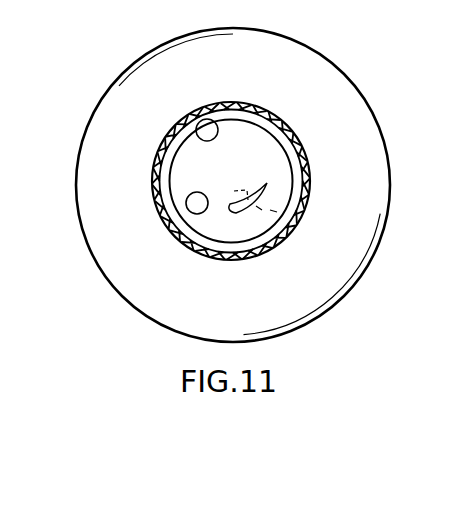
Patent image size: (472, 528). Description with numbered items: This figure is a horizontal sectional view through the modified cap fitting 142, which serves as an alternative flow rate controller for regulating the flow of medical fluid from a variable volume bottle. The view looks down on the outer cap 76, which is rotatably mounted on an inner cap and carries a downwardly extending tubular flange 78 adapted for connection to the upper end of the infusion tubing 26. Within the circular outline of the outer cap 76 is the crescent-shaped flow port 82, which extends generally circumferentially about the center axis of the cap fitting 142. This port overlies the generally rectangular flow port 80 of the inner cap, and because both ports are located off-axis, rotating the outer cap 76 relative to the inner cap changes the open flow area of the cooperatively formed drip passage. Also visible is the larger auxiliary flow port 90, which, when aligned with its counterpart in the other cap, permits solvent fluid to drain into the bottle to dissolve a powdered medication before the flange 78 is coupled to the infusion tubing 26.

The modified cap fitting 142 is at (84, 137).
The outer cap 76 is at (352, 110).
The infusion tubing 26 is at (252, 106).
The flow port 80 is at (313, 202).
The tubular flange 78 is at (212, 120).
The auxiliary flow port 90 is at (196, 204).
The flow port 82 is at (235, 213).